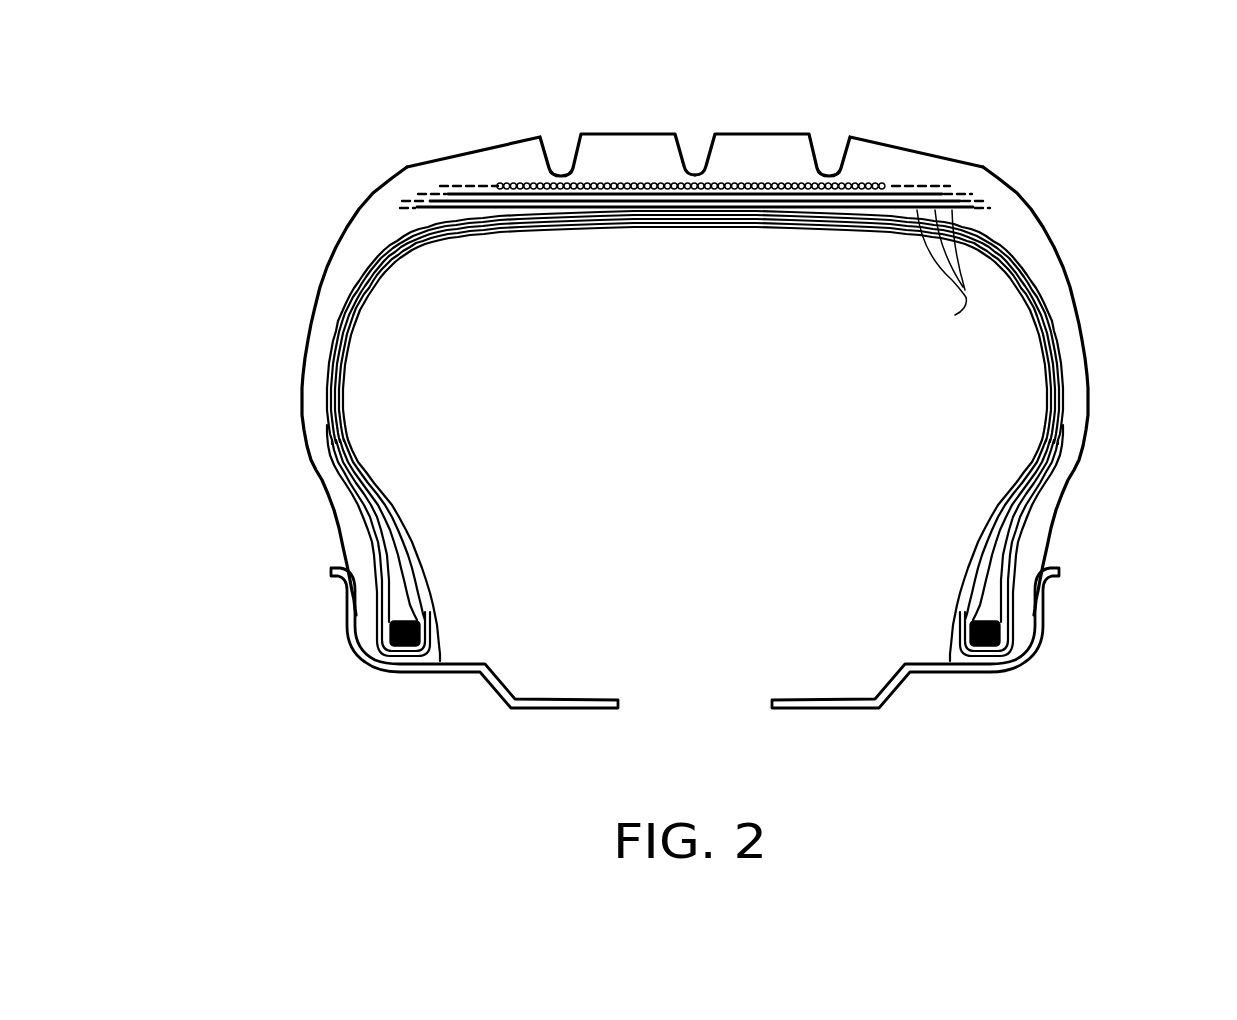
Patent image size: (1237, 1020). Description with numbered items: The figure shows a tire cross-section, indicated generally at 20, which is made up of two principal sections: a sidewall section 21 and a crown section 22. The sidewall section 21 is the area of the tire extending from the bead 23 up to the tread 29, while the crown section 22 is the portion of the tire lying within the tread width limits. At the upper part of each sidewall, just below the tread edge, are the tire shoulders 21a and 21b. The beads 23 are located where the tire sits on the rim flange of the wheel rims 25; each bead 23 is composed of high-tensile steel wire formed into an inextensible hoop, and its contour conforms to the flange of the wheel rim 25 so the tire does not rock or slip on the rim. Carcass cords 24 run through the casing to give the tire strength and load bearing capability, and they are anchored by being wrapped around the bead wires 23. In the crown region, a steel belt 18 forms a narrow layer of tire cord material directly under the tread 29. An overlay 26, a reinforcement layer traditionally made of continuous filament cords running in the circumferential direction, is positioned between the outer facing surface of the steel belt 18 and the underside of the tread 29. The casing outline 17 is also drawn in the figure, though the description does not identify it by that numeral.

The sidewall 17 is at (1077, 366).
The steel belt 18 is at (941, 271).
The tire cross-section 20 is at (1104, 216).
The sidewall section 21 is at (275, 138).
The tire shoulder 21a is at (417, 165).
The tire shoulder 21b is at (973, 165).
The crown section 22 is at (1088, 70).
The bead 23 is at (400, 650).
The carcass cords 24 is at (422, 242).
The wheel rim 25 is at (560, 708).
The overlay 26 is at (747, 186).
The tread 29 is at (628, 157).